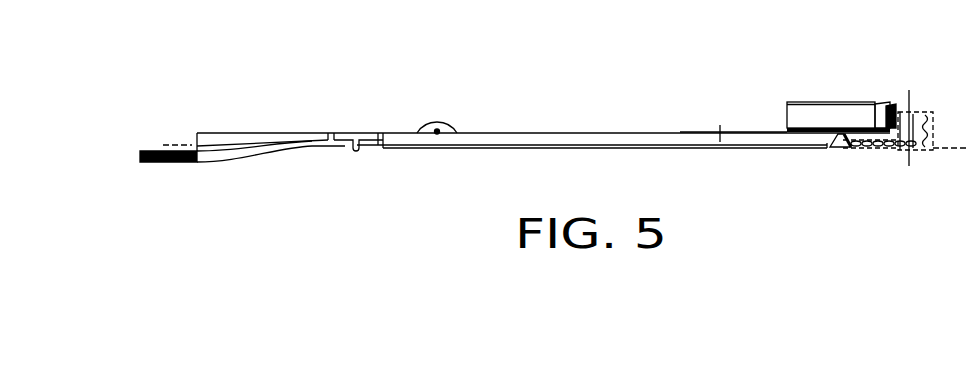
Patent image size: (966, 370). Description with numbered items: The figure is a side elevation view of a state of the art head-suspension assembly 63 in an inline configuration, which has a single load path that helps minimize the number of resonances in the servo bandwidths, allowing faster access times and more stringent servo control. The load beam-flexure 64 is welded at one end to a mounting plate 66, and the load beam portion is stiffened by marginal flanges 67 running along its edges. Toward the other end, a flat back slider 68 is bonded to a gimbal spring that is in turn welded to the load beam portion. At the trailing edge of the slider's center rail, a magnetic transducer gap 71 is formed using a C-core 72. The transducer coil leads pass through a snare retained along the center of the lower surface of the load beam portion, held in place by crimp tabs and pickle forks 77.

The head-suspension assembly 63 is at (407, 146).
The load beam-flexure 64 is at (485, 137).
The mounting plate 66 is at (196, 135).
The marginal flanges 67 is at (566, 137).
The flat back slider 68 is at (786, 124).
The magnetic transducer gap 71 is at (886, 103).
The C-core 72 is at (897, 103).
The pickle forks 77 is at (835, 147).